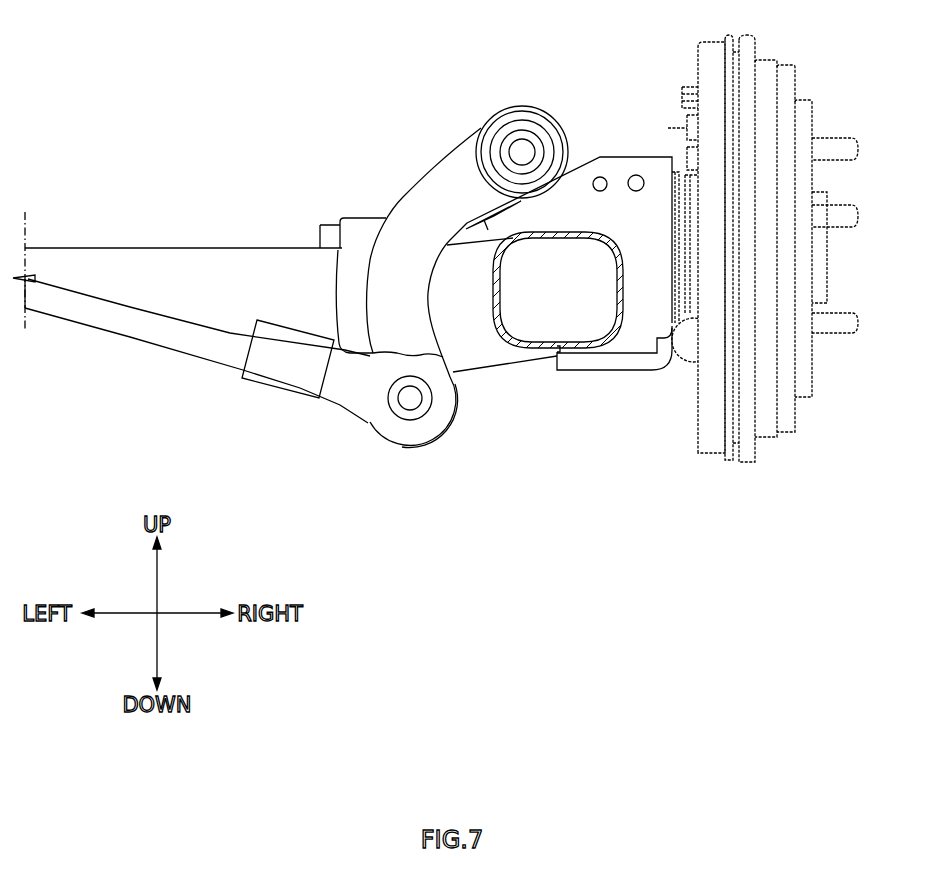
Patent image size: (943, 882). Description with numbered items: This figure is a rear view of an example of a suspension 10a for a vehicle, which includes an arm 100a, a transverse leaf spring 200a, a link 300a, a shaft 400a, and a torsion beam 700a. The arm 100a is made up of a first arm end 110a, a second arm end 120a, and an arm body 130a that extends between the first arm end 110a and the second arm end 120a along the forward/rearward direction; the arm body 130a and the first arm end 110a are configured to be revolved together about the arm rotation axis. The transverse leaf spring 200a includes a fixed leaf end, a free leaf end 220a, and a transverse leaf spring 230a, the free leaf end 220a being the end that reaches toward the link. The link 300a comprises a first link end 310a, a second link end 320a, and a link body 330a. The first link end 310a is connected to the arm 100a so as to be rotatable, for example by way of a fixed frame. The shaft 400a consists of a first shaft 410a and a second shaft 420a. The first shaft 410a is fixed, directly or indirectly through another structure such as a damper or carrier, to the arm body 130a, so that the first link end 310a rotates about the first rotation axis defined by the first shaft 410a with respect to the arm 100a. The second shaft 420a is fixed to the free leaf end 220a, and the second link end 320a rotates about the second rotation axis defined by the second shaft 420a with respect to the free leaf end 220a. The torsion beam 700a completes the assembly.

The suspension for a vehicle 10a is at (104, 45).
The torsion beam 700a is at (103, 254).
The arm 100a is at (564, 389).
The first arm end 110a is at (558, 370).
The second arm end 120a is at (356, 228).
The arm body 130a is at (487, 362).
The transverse leaf spring 200a is at (191, 379).
The free leaf end 220a is at (327, 399).
The transverse leaf spring 230a is at (178, 338).
The link 300a is at (588, 379).
The first link end 310a is at (522, 106).
The second link end 320a is at (437, 446).
The link body 330a is at (430, 212).
The shaft 400a is at (554, 428).
The first shaft 410a is at (541, 141).
The second shaft 420a is at (402, 412).